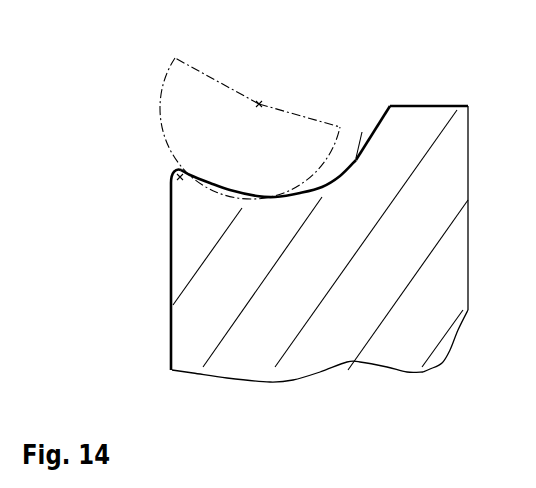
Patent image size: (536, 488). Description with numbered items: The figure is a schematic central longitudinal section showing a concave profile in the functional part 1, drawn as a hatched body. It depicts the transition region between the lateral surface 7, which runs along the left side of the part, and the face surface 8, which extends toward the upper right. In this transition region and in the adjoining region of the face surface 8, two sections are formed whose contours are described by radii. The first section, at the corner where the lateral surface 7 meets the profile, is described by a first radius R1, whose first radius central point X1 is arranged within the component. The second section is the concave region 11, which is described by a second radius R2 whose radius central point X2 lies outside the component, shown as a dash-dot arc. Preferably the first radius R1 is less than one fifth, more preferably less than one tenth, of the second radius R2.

The functional part 1 is at (127, 283).
The lateral surface 7 is at (171, 220).
The face surface 8 is at (355, 160).
The concave region 11 is at (217, 152).
The first radius R1 is at (175, 170).
The second radius R2 is at (259, 104).
The first radius central point X1 is at (181, 178).
The radius central point X2 is at (260, 103).